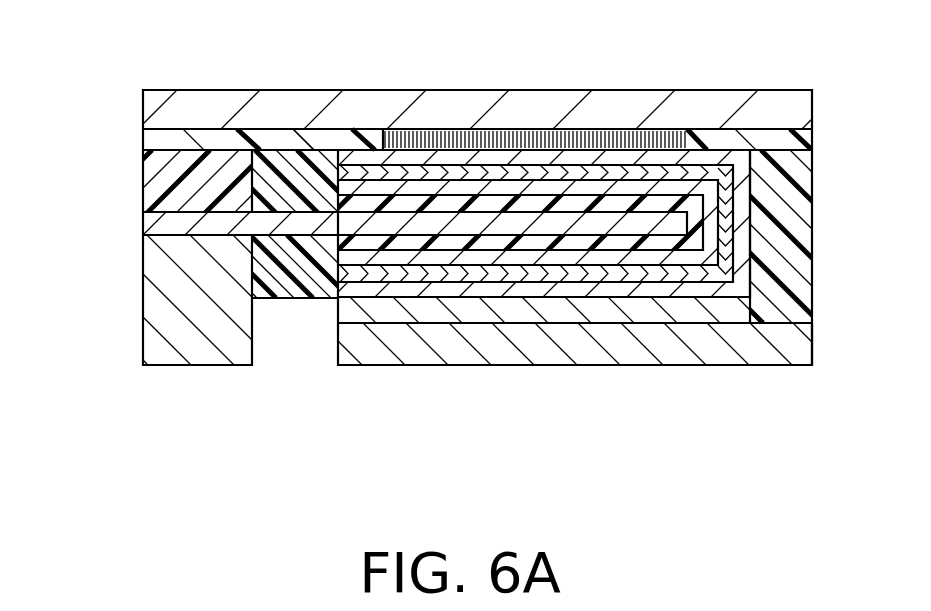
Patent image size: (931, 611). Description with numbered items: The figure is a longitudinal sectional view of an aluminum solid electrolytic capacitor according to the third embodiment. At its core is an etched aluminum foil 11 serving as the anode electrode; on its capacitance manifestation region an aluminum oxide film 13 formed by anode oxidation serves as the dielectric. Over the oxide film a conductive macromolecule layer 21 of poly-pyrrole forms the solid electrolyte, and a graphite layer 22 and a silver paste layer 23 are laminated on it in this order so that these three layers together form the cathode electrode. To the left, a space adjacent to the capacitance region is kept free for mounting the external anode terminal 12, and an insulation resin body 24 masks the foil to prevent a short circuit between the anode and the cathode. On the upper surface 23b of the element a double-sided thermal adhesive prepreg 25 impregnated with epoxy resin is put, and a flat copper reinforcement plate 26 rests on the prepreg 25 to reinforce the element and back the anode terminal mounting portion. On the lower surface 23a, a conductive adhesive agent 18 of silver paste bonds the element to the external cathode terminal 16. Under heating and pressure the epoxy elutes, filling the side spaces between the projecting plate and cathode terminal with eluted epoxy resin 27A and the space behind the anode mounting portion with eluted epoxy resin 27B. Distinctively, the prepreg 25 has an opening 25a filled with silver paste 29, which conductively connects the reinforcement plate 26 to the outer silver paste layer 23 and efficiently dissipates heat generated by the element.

The aluminum foil 11 is at (163, 228).
The external anode terminal 12 is at (195, 345).
The aluminum oxide film 13 is at (703, 150).
The external cathode terminal 16 is at (412, 345).
The conductive adhesive agent 18 is at (690, 310).
The conductive macromolecule layer 21 is at (638, 182).
The graphite layer 22 is at (523, 173).
The silver paste layer 23 is at (350, 147).
The lower surface 23a is at (535, 297).
The upper surface 23b is at (463, 147).
The insulation resin body 24 is at (293, 147).
The prepreg 25 is at (203, 147).
The opening 25a is at (366, 137).
The reinforcement plate 26 is at (757, 147).
The eluted epoxy resin 27A is at (795, 365).
The eluted epoxy resin 27B is at (163, 182).
The silver paste 29 is at (574, 128).